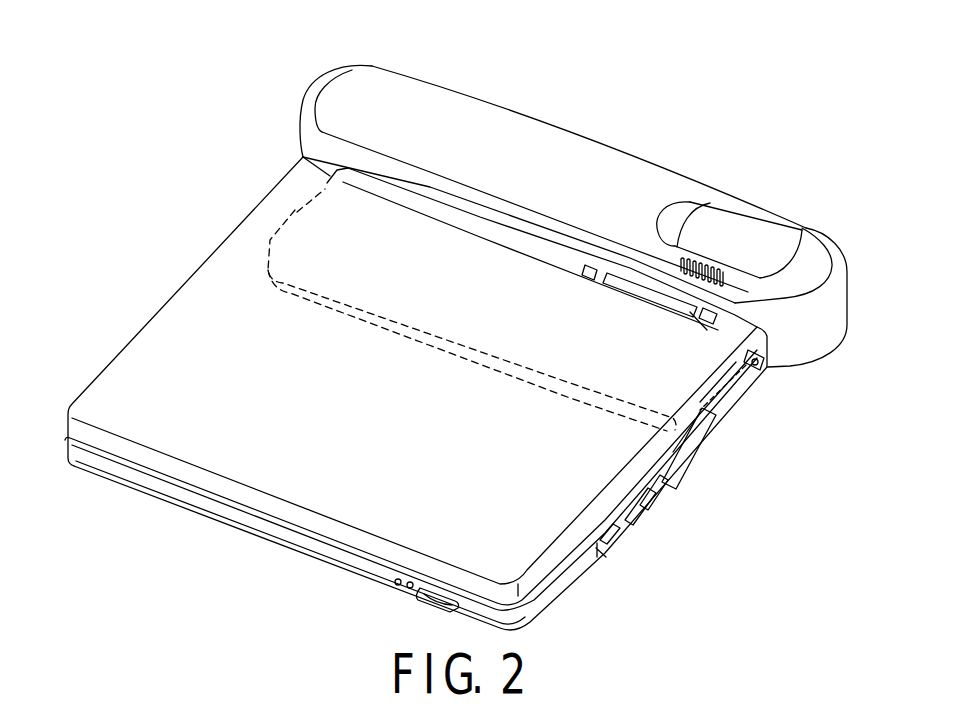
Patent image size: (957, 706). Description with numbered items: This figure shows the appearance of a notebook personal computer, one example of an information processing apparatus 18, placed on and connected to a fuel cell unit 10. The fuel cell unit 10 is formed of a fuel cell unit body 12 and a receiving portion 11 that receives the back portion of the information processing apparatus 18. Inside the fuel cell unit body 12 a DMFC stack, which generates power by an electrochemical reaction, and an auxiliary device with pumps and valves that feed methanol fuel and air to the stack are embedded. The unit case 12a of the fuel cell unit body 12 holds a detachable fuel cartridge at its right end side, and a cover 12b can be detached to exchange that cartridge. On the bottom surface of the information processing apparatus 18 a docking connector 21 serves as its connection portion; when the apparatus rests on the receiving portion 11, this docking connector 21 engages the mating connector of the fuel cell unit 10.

The fuel cell unit 10 is at (542, 78).
The receiving portion 11 is at (297, 212).
The fuel cell unit body 12 is at (601, 147).
The unit case 12a is at (338, 72).
The cover 12b is at (821, 245).
The information processing apparatus 18 is at (188, 513).
The docking connector 21 is at (327, 307).